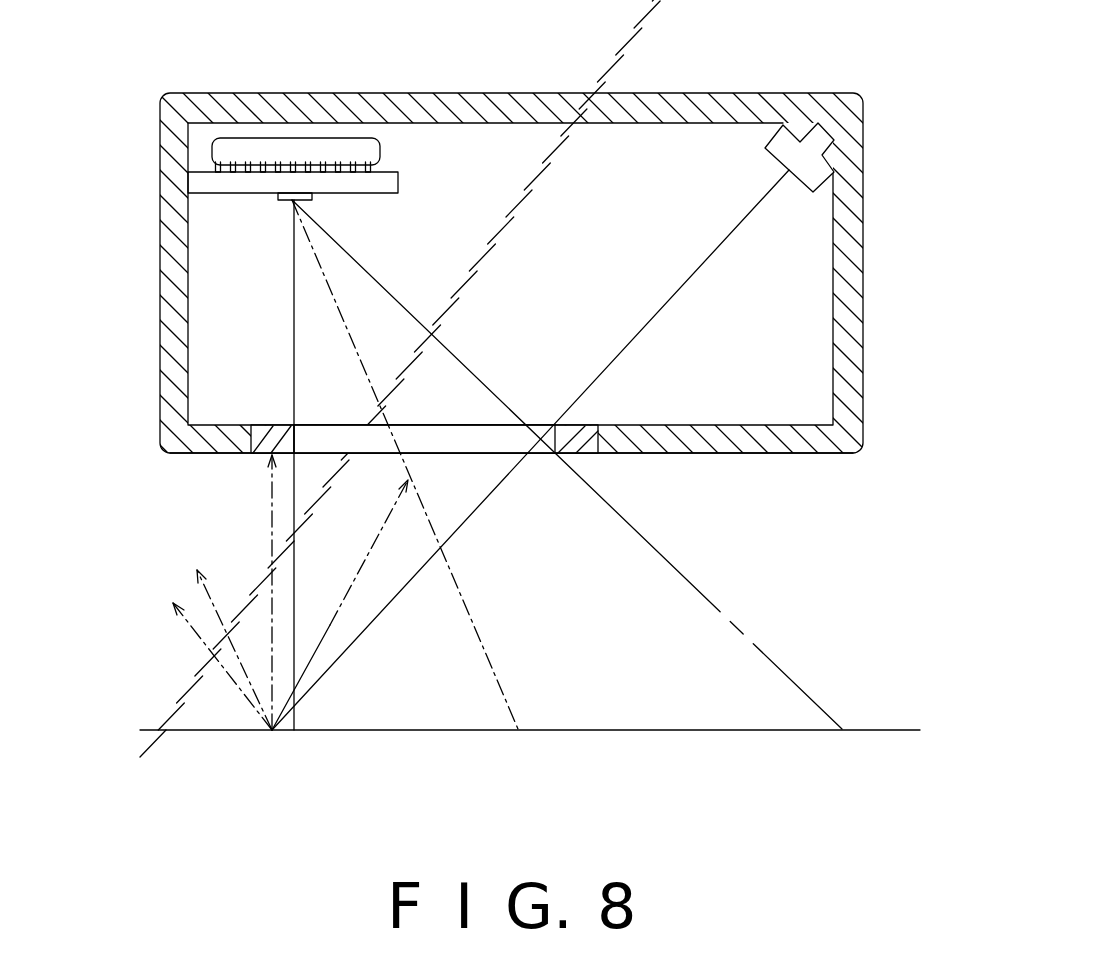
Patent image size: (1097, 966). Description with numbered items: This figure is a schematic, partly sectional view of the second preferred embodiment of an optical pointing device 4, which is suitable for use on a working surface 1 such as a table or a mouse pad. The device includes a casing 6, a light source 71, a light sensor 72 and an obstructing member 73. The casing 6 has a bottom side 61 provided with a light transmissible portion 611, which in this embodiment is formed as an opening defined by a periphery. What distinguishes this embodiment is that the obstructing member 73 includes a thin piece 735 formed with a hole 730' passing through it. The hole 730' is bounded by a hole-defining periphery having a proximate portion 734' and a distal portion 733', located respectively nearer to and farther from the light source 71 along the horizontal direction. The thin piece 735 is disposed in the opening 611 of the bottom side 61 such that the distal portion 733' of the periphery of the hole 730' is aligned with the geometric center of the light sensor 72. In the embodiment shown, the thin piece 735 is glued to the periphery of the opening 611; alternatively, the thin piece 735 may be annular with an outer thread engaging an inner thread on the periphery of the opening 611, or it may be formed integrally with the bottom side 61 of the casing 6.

The working surface 1 is at (170, 730).
The optical pointing device 4 is at (501, 365).
The casing 6 is at (511, 261).
The bottom side 61 is at (752, 453).
The light transmissible portion 611 is at (527, 410).
The light source 71 is at (815, 132).
The light sensor 72 is at (278, 200).
The obstructing member 73 is at (354, 442).
The hole 730' is at (424, 397).
The distal portion 733' is at (326, 484).
The proximate portion 734' is at (541, 483).
The thin piece 735 is at (260, 453).